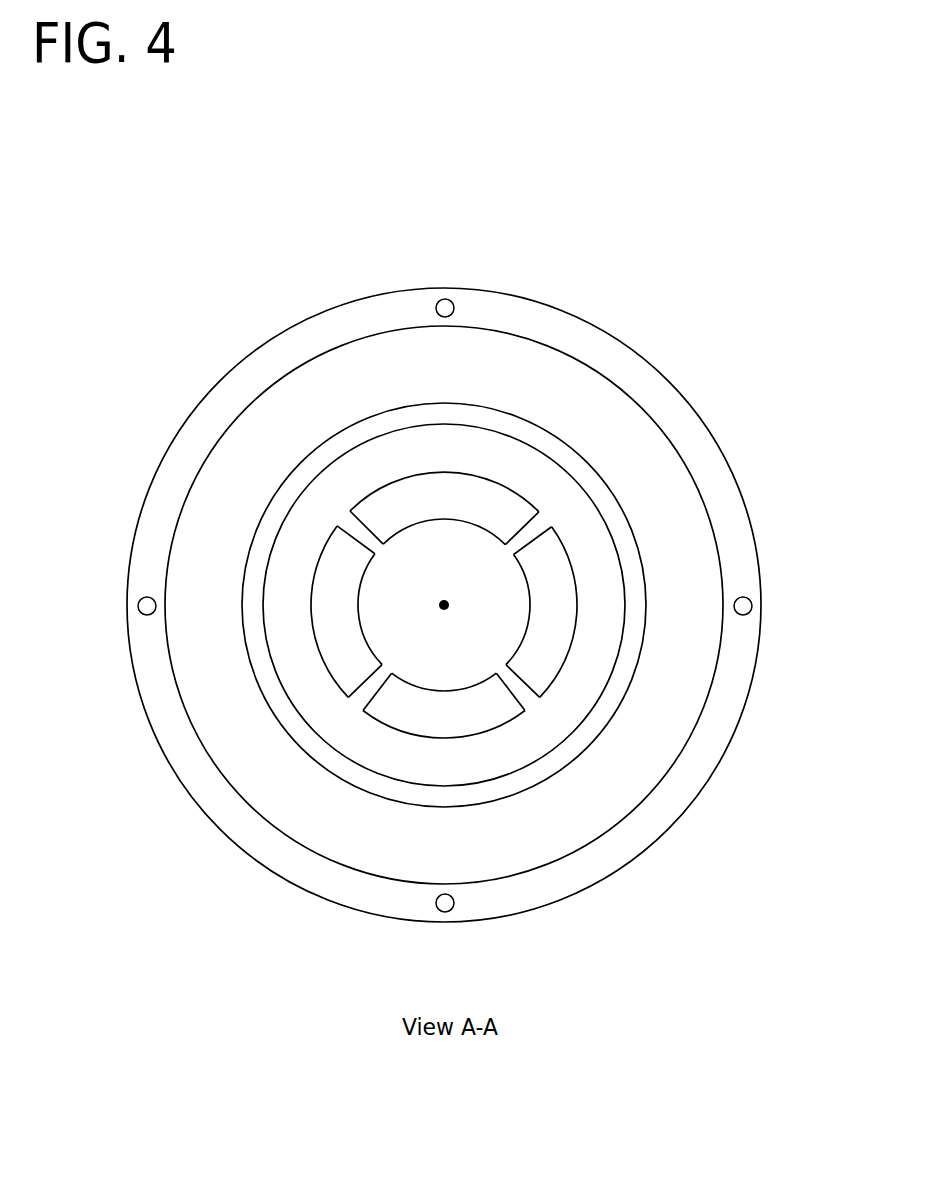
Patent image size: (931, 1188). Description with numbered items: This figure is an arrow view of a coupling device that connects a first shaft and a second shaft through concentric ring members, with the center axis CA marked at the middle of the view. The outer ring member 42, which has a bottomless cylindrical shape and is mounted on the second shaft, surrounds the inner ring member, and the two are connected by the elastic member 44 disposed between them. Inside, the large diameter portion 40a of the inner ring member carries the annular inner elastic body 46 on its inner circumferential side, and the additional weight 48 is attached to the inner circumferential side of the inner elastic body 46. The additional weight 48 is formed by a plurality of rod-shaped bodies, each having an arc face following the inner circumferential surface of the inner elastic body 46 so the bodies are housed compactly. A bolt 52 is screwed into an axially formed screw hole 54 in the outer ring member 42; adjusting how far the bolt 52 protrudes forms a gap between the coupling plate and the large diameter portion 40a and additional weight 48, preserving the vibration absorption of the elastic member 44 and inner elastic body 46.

The outer ring member 42 is at (505, 295).
The elastic member 44 is at (553, 375).
The large diameter portion 40a is at (582, 453).
The inner elastic body 46 is at (385, 453).
The additional weight 48 is at (397, 535).
The central axis CA is at (444, 600).
The bolt 52 is at (448, 911).
The screw hole 54 is at (741, 615).